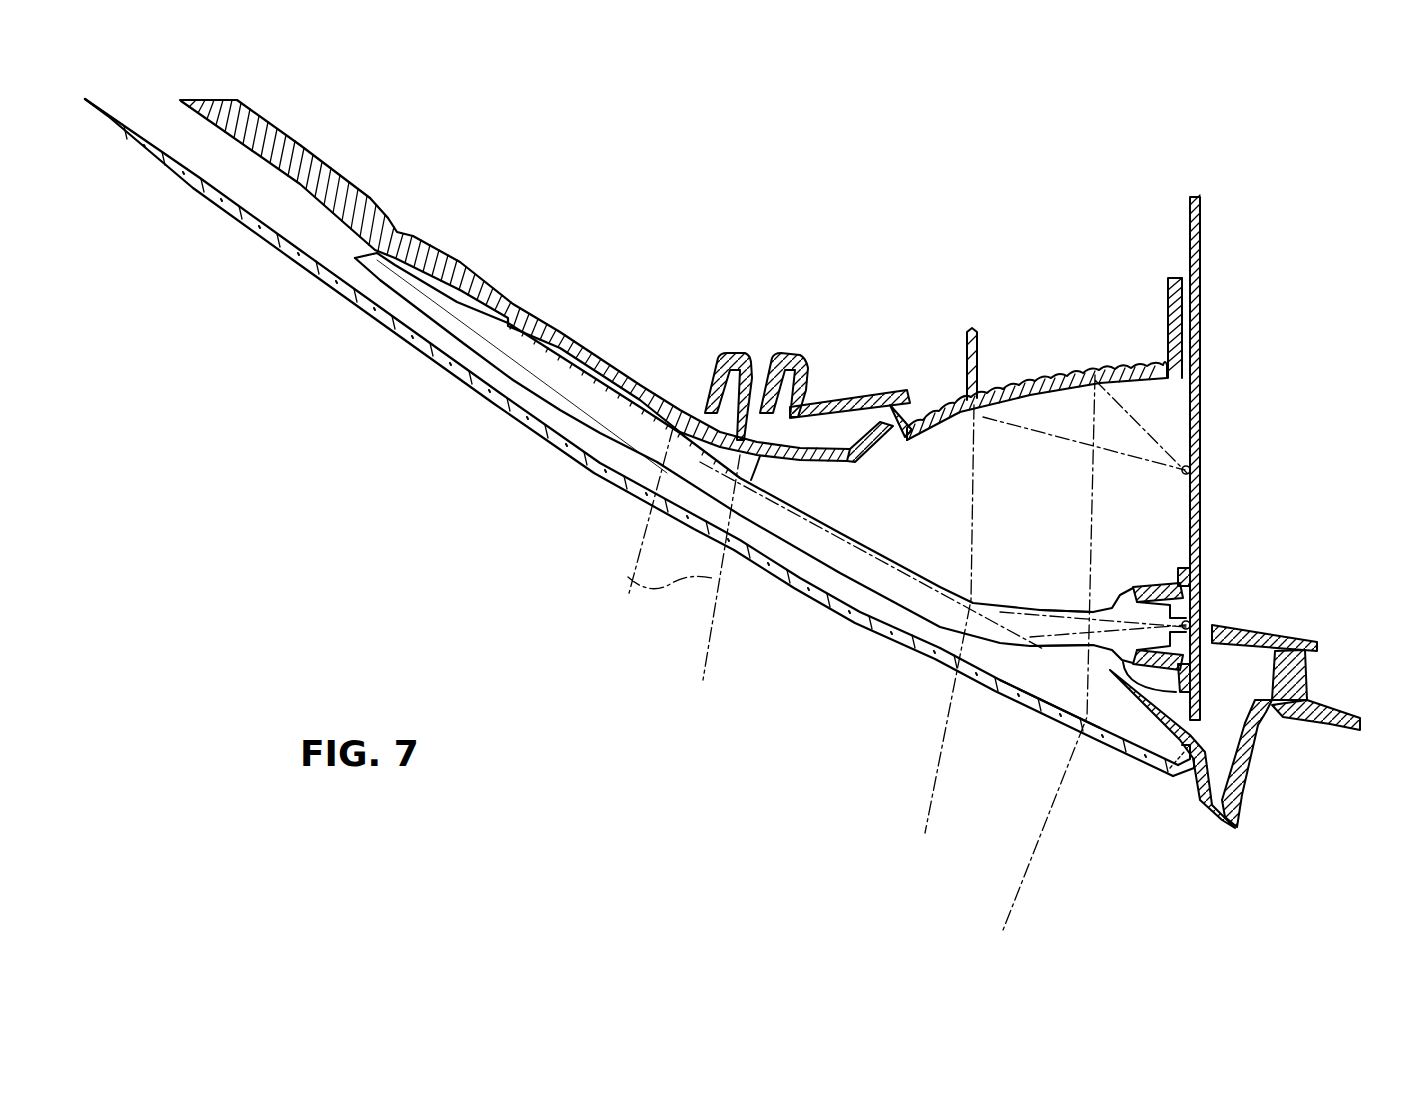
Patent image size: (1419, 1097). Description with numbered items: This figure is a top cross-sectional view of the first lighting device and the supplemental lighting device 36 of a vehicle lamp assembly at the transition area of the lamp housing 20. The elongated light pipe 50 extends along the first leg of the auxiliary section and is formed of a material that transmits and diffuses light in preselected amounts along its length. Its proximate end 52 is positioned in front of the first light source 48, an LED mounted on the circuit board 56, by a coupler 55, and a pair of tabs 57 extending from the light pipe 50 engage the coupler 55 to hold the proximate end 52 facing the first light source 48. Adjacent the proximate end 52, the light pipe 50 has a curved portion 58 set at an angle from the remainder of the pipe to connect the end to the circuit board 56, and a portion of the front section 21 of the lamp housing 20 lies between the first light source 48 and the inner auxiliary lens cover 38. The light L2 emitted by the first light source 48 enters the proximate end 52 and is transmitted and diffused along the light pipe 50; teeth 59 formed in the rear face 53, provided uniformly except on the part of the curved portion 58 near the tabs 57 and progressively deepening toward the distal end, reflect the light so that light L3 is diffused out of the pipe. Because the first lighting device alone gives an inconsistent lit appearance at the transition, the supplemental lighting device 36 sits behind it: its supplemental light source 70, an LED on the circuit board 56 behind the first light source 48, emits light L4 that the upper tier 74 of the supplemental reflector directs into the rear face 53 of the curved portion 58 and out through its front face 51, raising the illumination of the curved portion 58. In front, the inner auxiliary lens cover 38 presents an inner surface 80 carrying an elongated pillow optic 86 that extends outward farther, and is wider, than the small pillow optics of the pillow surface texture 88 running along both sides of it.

The lamp housing 20 is at (1239, 194).
The front section 21 is at (1319, 710).
The supplemental lighting device 36 is at (1219, 288).
The inner auxiliary lens cover 38 is at (387, 325).
The first light source 48 is at (1203, 618).
The elongated light pipe 50 is at (691, 479).
The front face 51 is at (456, 340).
The proximate end 52 is at (1203, 598).
The rear face 53 is at (802, 409).
The coupler 55 is at (1164, 583).
The circuit board 56 is at (1205, 543).
The pair of tabs 57 is at (1128, 587).
The curved portion 58 is at (1036, 632).
The teeth 59 is at (508, 320).
The supplemental light source 70 is at (1197, 470).
The upper tier 74 is at (1066, 369).
The inner surface 80 is at (533, 397).
The elongated pillow optic 86 is at (1066, 737).
The pillow surface texture 88 is at (886, 632).
The light L2 is at (1059, 606).
The light L3 is at (673, 587).
The light L4 is at (1181, 420).